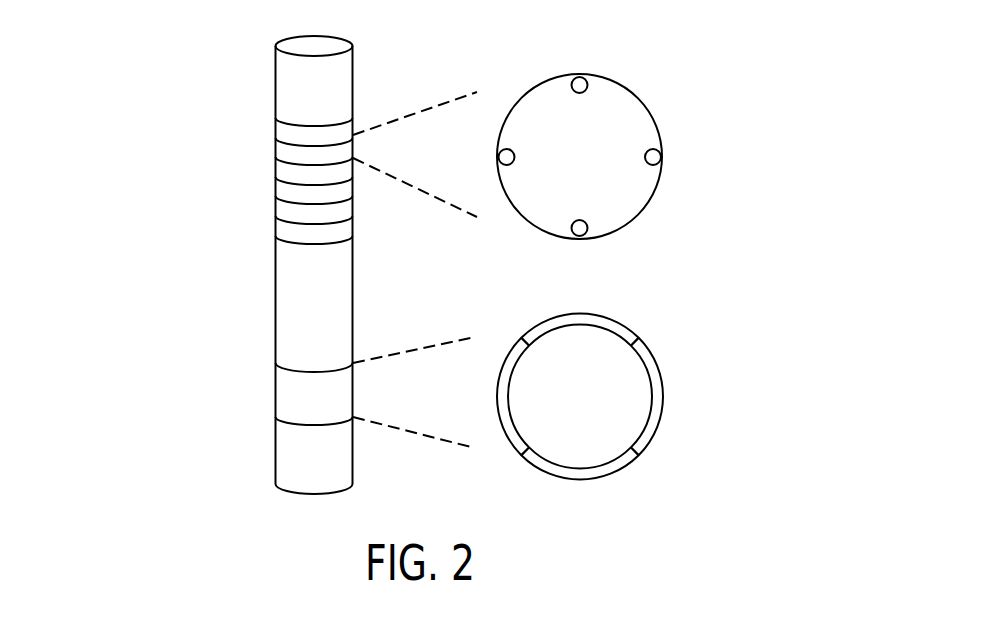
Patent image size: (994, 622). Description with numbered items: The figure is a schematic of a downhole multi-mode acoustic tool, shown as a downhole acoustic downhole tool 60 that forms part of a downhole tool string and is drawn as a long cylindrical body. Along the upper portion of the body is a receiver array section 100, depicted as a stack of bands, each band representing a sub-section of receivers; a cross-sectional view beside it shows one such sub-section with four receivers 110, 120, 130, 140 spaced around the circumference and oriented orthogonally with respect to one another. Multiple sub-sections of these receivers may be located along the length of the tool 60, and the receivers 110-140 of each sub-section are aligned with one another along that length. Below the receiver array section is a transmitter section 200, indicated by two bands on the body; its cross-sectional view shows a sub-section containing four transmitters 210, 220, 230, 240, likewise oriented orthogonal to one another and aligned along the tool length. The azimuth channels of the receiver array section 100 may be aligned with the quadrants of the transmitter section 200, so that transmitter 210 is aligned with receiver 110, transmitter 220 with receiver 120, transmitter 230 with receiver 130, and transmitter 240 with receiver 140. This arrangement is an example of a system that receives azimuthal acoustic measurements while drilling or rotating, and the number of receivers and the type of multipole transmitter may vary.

The downhole acoustic downhole tool 60 is at (314, 248).
The receiver array section 100 is at (252, 117).
The receiver 110 is at (579, 100).
The receiver 120 is at (631, 158).
The receiver 130 is at (579, 214).
The receiver 140 is at (528, 158).
The transmitter section 200 is at (252, 363).
The transmitter 210 is at (579, 348).
The transmitter 220 is at (619, 396).
The transmitter 230 is at (579, 445).
The transmitter 240 is at (538, 396).